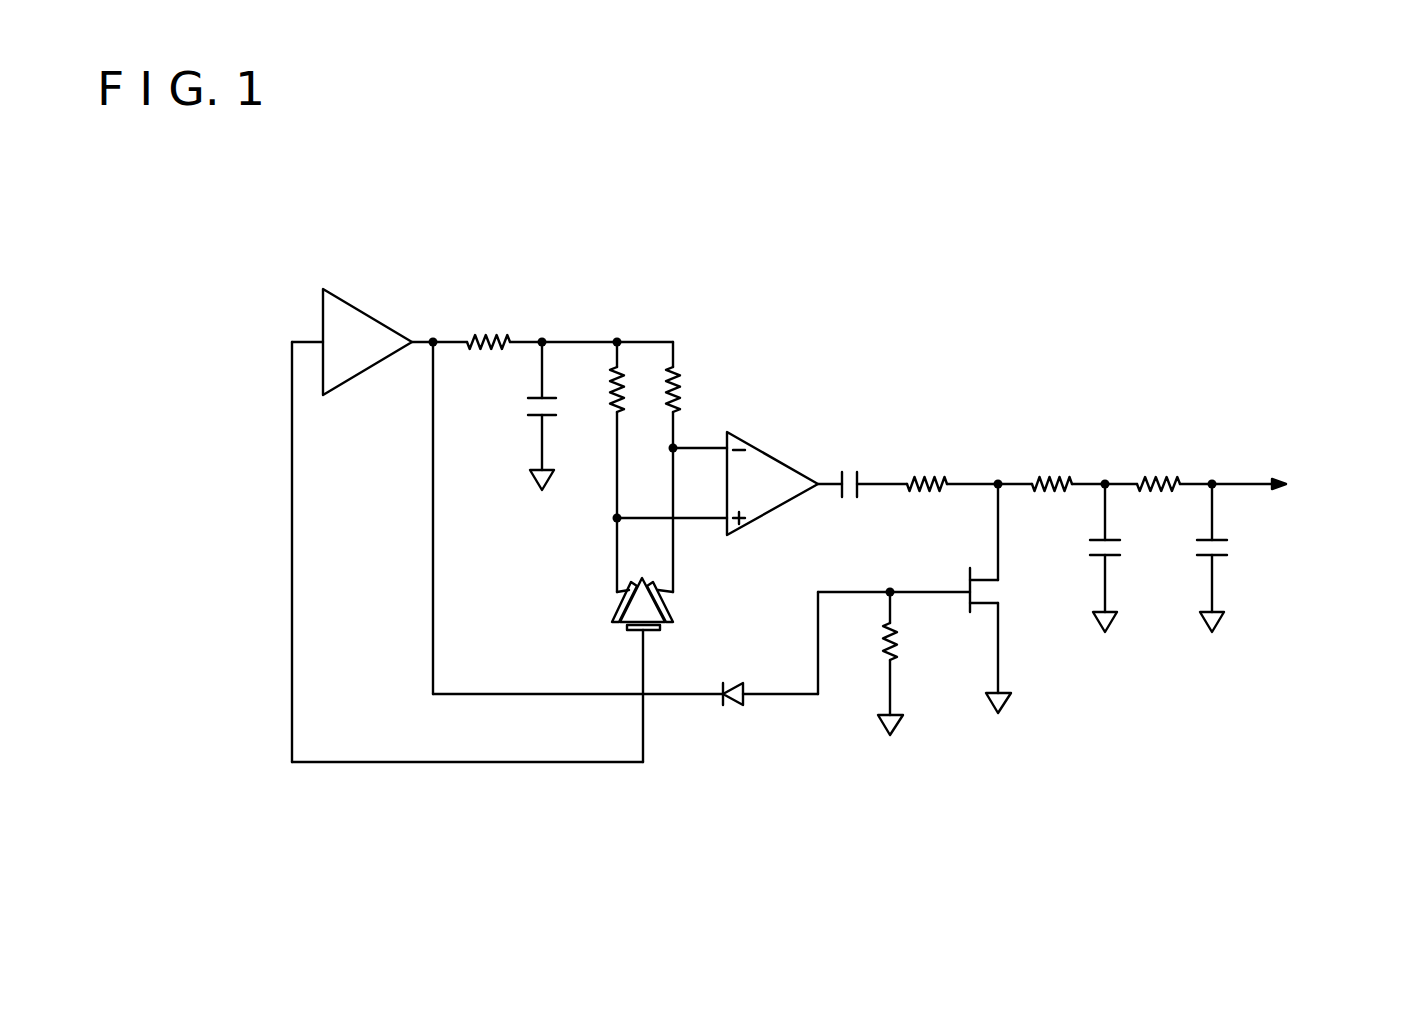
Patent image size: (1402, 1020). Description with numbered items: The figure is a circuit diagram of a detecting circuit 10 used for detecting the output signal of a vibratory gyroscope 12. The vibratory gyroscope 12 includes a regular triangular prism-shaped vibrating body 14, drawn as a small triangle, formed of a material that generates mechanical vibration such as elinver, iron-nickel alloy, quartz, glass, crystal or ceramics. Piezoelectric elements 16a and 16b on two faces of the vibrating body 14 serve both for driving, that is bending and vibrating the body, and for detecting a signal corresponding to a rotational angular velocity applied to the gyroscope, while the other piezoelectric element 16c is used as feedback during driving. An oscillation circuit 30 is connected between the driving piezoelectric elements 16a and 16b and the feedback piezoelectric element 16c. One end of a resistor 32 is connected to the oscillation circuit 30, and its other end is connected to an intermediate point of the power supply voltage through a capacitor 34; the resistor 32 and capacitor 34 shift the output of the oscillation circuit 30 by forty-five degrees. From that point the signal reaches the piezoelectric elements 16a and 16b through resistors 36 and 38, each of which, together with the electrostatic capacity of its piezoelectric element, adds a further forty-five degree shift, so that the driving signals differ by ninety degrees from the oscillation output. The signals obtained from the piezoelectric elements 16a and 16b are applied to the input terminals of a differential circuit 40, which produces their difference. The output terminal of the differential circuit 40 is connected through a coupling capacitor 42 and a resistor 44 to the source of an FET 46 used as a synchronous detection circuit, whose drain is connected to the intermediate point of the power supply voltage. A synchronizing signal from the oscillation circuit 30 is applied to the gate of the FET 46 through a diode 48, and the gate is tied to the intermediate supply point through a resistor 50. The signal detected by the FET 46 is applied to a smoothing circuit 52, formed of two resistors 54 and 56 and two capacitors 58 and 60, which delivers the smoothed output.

The detecting circuit 10 is at (250, 214).
The vibratory gyroscope 12 is at (600, 617).
The vibrating body 14 is at (667, 615).
The piezoelectric element 16a is at (612, 597).
The piezoelectric element 16b is at (667, 595).
The piezoelectric element 16c is at (632, 628).
The oscillation circuit 30 is at (368, 318).
The resistor 32 is at (487, 333).
The capacitor 34 is at (530, 423).
The resistor 36 is at (617, 397).
The resistor 38 is at (682, 380).
The differential circuit 40 is at (770, 468).
The coupling capacitor 42 is at (860, 477).
The resistor 44 is at (928, 477).
The FET 46 is at (970, 577).
The diode 48 is at (725, 710).
The resistor 50 is at (892, 653).
The smoothing circuit 52 is at (1132, 428).
The resistor 54 is at (1037, 480).
The resistor 56 is at (1155, 483).
The capacitor 58 is at (1098, 555).
The capacitor 60 is at (1207, 555).